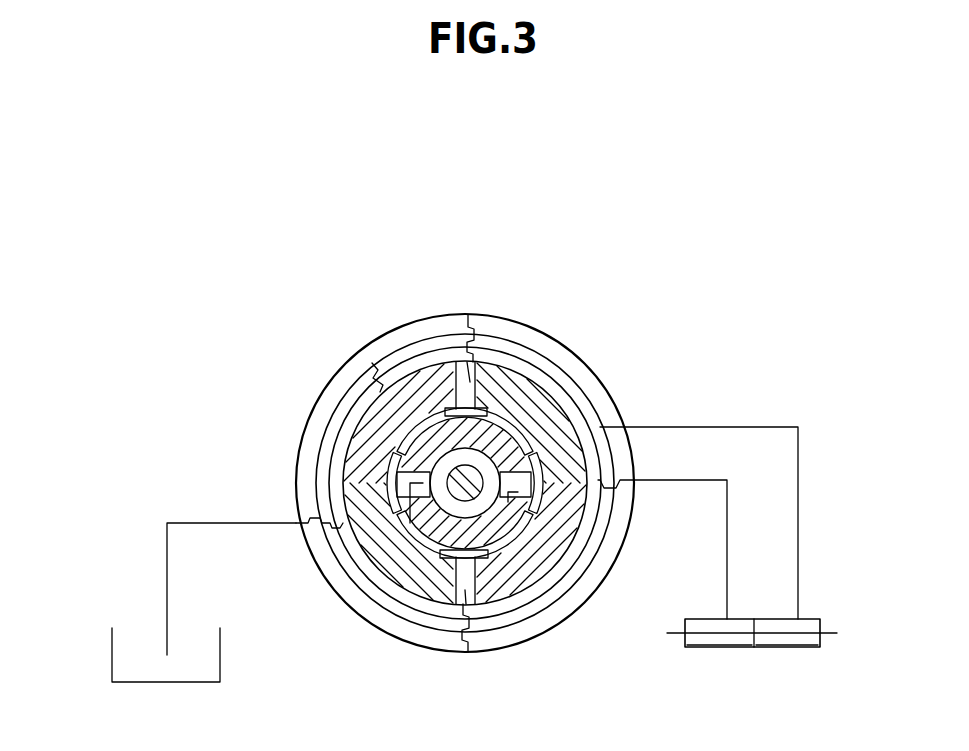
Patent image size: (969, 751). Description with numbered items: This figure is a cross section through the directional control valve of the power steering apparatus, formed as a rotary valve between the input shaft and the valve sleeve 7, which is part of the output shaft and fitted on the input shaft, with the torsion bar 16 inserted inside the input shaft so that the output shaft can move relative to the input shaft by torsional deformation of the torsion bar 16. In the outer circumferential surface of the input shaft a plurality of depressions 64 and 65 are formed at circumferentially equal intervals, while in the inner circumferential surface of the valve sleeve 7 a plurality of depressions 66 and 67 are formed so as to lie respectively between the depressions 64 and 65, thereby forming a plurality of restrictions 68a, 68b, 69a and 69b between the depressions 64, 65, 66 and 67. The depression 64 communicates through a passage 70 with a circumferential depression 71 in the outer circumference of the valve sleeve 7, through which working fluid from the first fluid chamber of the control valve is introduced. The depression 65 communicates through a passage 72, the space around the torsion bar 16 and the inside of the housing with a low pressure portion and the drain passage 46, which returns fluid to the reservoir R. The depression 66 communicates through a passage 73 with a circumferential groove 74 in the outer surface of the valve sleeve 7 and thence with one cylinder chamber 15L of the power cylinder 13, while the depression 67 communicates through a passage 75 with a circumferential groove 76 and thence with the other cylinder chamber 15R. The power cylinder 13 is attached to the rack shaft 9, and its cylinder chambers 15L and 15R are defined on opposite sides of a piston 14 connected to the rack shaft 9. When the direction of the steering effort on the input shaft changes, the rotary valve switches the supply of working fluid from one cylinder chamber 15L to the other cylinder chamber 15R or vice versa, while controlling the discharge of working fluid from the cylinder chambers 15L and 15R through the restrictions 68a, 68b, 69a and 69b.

The valve sleeve 7 is at (400, 463).
The rack shaft 9 is at (835, 633).
The power cylinder 13 is at (811, 613).
The piston 14 is at (762, 640).
The cylinder chamber 15L is at (710, 642).
The cylinder chamber 15R is at (805, 642).
The torsion bar 16 is at (337, 588).
The drain passage 46 is at (167, 553).
The reservoir R is at (112, 648).
The depression 64 is at (503, 398).
The depression 65 is at (350, 475).
The depression 66 is at (550, 441).
The depression 67 is at (422, 390).
The restriction 68a is at (510, 388).
The restriction 68b is at (370, 511).
The restriction 69a is at (438, 396).
The restriction 69b is at (379, 438).
The passage 70 is at (467, 382).
The circumferential depression 71 is at (375, 567).
The passage 72 is at (590, 545).
The passage 73 is at (575, 403).
The circumferential groove 74 is at (597, 423).
The passage 75 is at (348, 410).
The circumferential groove 76 is at (395, 410).